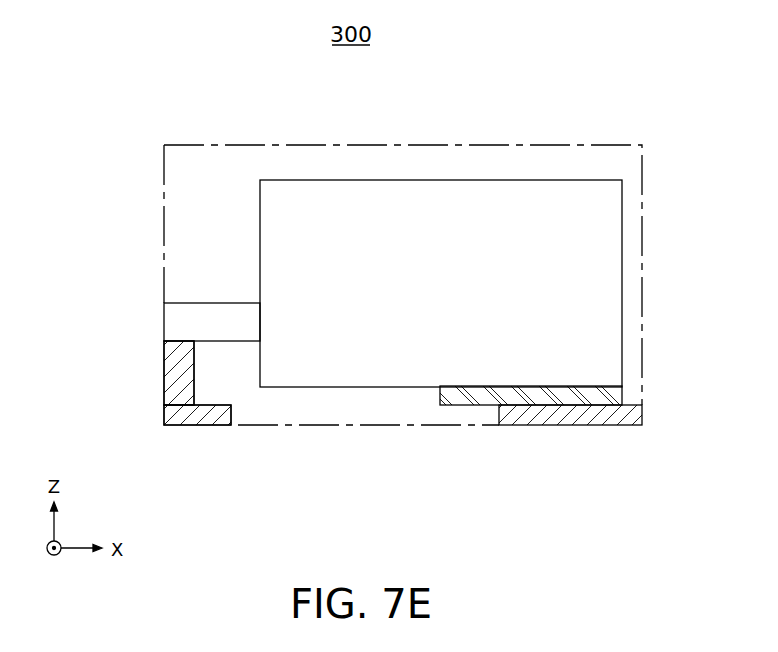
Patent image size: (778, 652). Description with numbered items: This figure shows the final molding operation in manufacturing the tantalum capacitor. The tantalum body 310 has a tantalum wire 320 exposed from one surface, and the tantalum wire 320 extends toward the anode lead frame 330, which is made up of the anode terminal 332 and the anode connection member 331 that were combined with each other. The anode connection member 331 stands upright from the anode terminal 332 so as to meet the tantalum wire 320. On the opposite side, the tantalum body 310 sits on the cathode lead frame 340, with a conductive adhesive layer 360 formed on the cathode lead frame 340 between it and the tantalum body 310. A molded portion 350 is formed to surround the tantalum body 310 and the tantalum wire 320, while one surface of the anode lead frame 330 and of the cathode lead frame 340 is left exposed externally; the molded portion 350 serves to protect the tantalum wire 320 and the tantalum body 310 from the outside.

The tantalum body 310 is at (608, 253).
The tantalum wire 320 is at (172, 314).
The anode lead frame 330 is at (182, 427).
The anode connection member 331 is at (172, 397).
The anode terminal 332 is at (216, 418).
The cathode lead frame 340 is at (606, 418).
The molded portion 350 is at (581, 143).
The conductive adhesive layer 360 is at (468, 406).